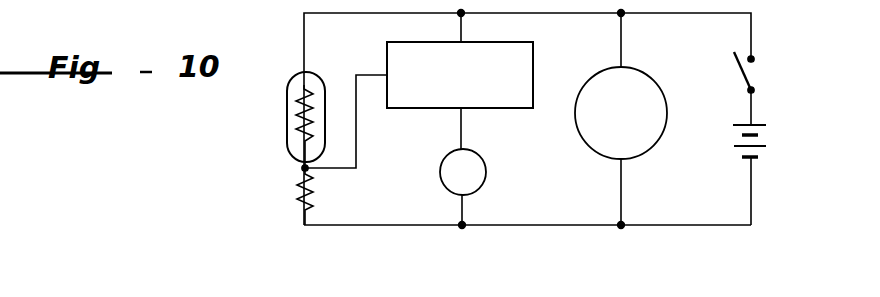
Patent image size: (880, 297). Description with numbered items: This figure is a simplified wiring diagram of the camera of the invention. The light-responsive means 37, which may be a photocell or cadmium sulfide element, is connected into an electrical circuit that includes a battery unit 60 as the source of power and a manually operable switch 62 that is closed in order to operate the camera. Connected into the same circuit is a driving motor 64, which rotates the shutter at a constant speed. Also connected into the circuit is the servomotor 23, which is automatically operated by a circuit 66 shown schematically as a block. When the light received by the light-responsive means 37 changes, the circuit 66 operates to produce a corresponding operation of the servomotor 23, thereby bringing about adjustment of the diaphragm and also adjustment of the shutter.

The light-responsive means 37 is at (287, 109).
The circuit 66 is at (521, 100).
The servomotor 23 is at (476, 181).
The driving motor 64 is at (626, 139).
The manually operable switch 62 is at (746, 75).
The battery unit 60 is at (764, 140).